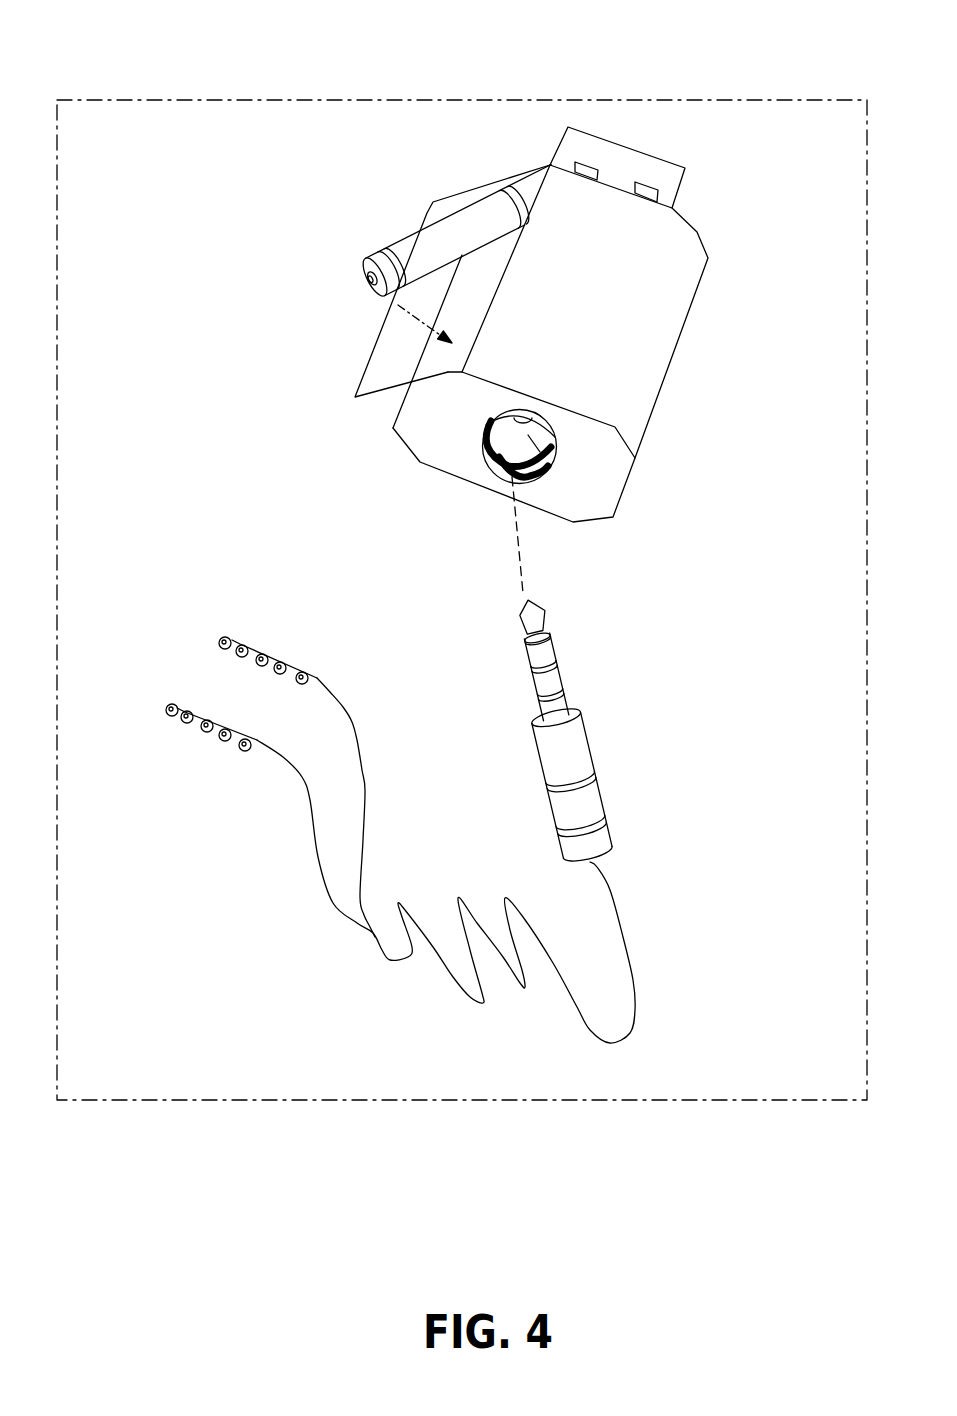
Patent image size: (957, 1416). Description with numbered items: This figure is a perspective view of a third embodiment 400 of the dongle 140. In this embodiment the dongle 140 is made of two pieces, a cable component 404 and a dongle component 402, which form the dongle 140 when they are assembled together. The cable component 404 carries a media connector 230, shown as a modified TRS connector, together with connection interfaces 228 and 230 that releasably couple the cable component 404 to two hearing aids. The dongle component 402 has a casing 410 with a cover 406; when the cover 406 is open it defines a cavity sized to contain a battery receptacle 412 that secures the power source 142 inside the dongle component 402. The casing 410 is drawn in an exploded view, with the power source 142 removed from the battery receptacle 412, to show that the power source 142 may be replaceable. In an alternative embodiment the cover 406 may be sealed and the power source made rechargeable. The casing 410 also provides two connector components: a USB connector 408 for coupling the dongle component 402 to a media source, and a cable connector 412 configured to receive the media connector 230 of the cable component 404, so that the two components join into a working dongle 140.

The third embodiment 400 is at (300, 24).
The dongle 140 is at (597, 100).
The power source 142 is at (370, 250).
The dongle component 402 is at (513, 360).
The cable component 404 is at (669, 838).
The cover 406 is at (378, 335).
The USB connector 408 is at (645, 154).
The casing 410 is at (697, 230).
The cable connector 412 is at (440, 365).
The connection interface 228 is at (207, 728).
The media connector 230 is at (280, 662).